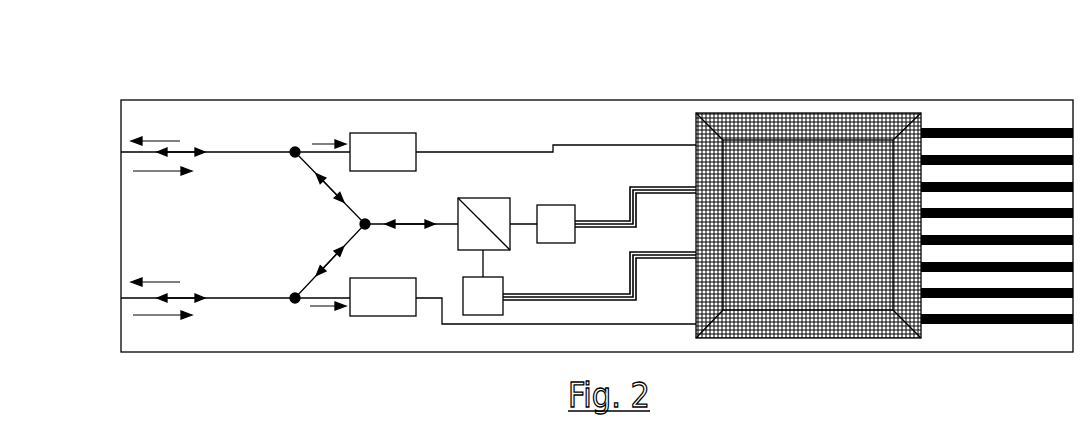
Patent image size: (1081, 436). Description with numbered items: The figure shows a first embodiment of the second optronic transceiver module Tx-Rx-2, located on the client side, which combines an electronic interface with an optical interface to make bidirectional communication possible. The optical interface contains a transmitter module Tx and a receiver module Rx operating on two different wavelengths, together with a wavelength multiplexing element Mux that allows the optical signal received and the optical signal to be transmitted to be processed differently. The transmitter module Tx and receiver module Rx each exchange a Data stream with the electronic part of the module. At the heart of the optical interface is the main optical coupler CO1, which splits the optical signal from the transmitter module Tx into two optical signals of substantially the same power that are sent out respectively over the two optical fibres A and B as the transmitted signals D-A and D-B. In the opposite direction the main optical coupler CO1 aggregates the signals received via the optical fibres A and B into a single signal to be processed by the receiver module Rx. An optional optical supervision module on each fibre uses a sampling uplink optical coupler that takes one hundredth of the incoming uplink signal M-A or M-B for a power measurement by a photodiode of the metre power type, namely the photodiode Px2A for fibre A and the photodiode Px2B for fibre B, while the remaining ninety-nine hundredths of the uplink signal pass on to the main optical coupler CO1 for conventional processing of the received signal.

The second optronic transceiver module Tx-Rx-2 is at (338, 99).
The optical fibre A is at (217, 151).
The optical fibre B is at (218, 298).
The monitoring signal on fibre A M-A is at (164, 130).
The data signal on fibre A D-A is at (162, 182).
The monitoring signal on fibre B M-B is at (164, 271).
The data signal on fibre B D-B is at (162, 327).
The photodiode of the metre power type Px2A is at (523, 152).
The photodiode of the metre power type for fibre B Px2B is at (523, 301).
The main optical coupler CO1 is at (374, 225).
The wavelength multiplexing element Mux is at (497, 225).
The transmitter module Tx is at (556, 224).
The receiver module Rx is at (483, 296).
The data connection Data is at (599, 243).